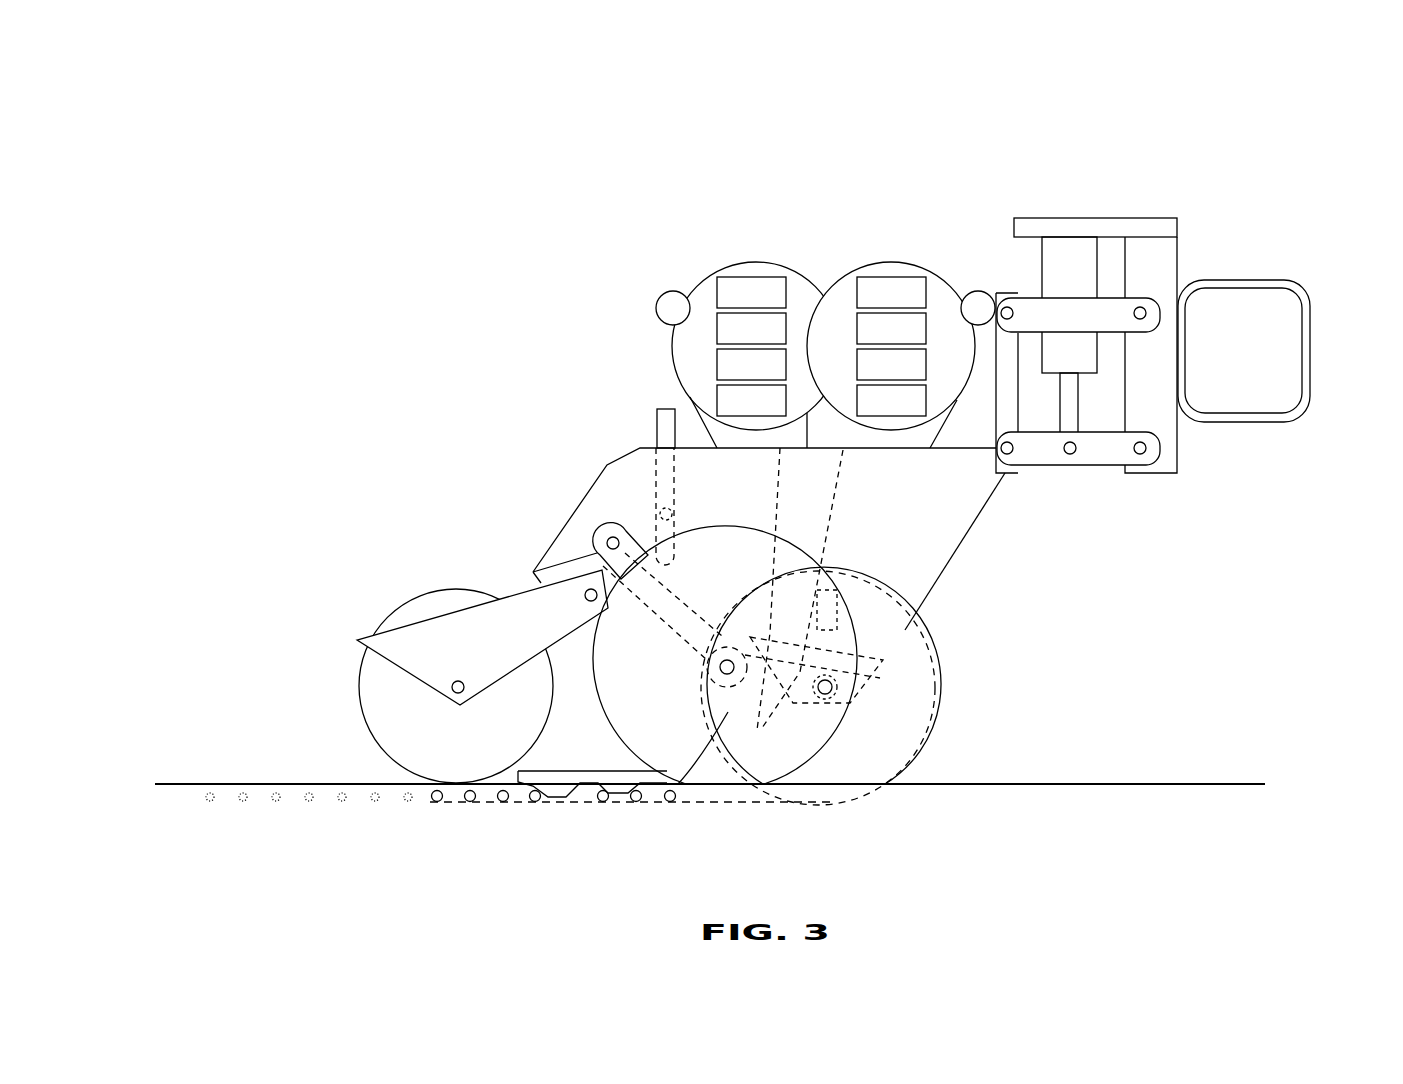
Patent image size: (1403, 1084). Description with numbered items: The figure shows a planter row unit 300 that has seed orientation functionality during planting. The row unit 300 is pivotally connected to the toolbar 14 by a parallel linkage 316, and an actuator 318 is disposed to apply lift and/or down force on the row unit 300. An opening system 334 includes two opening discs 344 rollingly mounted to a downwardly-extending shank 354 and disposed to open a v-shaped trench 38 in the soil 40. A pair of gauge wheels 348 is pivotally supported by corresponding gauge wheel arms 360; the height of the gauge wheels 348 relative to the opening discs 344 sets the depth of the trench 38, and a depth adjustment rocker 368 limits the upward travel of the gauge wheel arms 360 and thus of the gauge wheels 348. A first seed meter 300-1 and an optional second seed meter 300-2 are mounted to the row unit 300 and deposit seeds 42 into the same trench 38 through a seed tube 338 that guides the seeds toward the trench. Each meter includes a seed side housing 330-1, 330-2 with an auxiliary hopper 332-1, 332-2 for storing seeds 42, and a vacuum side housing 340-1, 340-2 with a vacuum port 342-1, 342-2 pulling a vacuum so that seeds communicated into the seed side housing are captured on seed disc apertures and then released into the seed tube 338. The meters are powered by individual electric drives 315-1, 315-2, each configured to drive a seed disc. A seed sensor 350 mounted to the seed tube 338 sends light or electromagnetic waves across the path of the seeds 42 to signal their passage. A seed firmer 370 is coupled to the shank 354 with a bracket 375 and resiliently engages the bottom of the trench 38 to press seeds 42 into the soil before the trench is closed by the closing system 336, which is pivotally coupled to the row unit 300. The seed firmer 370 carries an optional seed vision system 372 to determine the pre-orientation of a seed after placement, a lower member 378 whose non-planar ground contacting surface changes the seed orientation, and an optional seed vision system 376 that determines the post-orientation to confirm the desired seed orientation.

The row unit 300 is at (1077, 156).
The first seed meter 300-1 is at (669, 375).
The second seed meter 300-2 is at (868, 258).
The electric drive 315-1 is at (660, 294).
The electric drive 315-2 is at (986, 294).
The actuator 318 is at (1086, 345).
The parallel linkage 316 is at (1099, 478).
The toolbar 14 is at (1308, 357).
The seed side housing 330-1 is at (751, 292).
The auxiliary hopper 332-1 is at (751, 328).
The vacuum port 342-1 is at (751, 364).
The vacuum side housing 340-1 is at (751, 400).
The seed side housing 330-2 is at (891, 292).
The auxiliary hopper 332-2 is at (891, 328).
The vacuum port 342-2 is at (891, 364).
The vacuum side housing 340-2 is at (891, 400).
The depth adjustment rocker 368 is at (657, 493).
The seed tube 338 is at (800, 589).
The gauge wheel arm 360 is at (535, 565).
The shank 354 is at (983, 543).
The closing system 336 is at (327, 625).
The gauge wheel 348 is at (725, 655).
The bracket 375 is at (870, 664).
The seed sensor 350 is at (823, 610).
The opening system 334 is at (1036, 641).
The seed firmer 370 is at (690, 757).
The opening disc 344 is at (824, 675).
The soil 40 is at (1136, 783).
The seed vision system 376 is at (527, 783).
The seeds 42 is at (621, 801).
The seed vision system 372 is at (659, 784).
The trench 38 is at (718, 797).
The lower member 378 is at (563, 800).